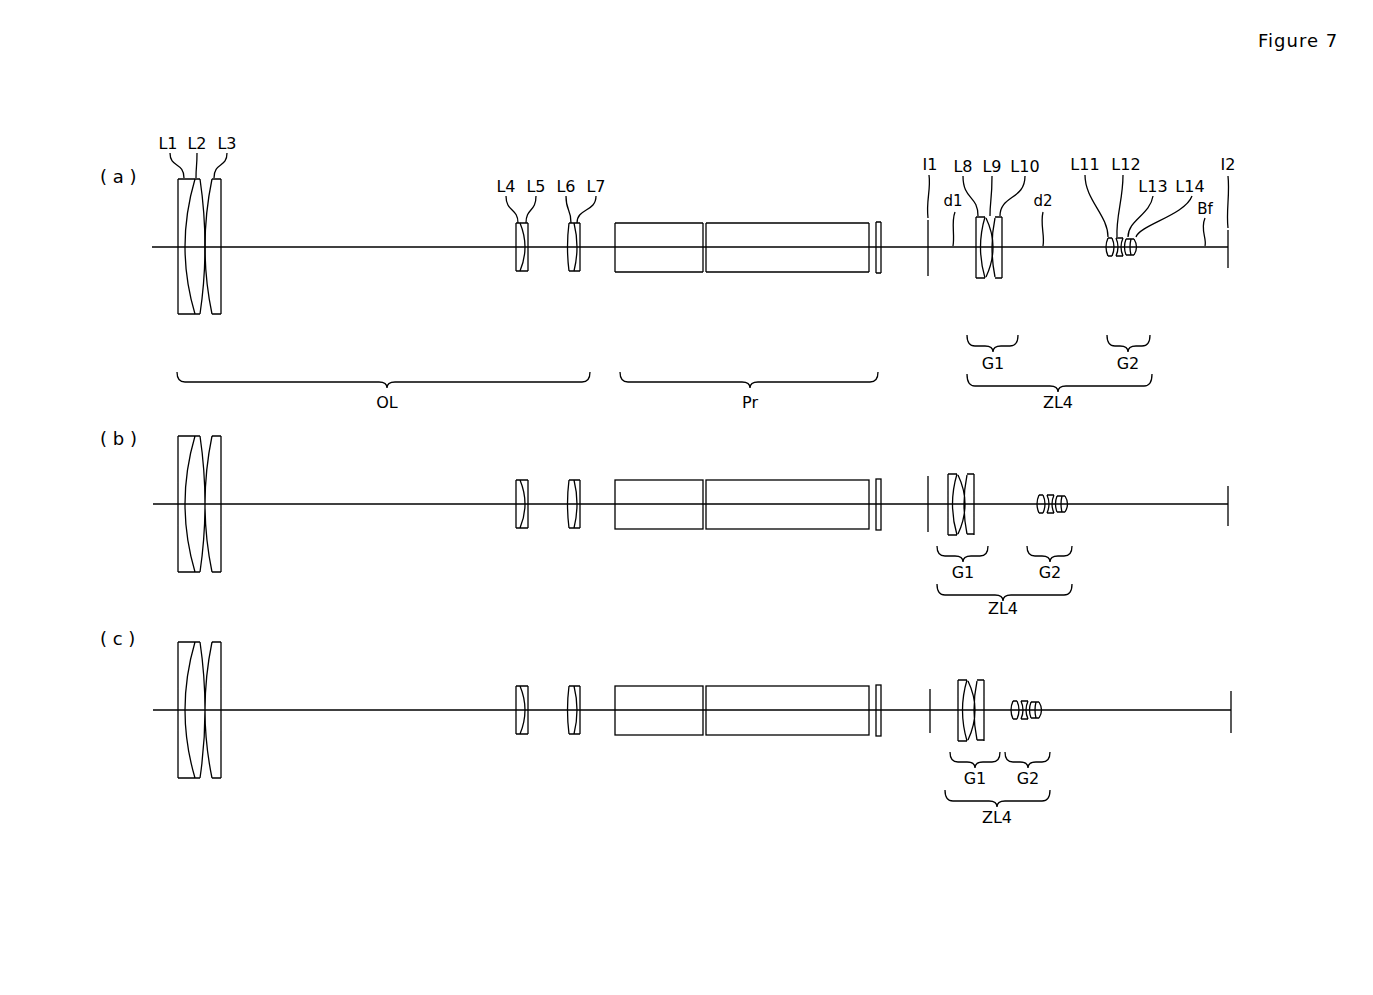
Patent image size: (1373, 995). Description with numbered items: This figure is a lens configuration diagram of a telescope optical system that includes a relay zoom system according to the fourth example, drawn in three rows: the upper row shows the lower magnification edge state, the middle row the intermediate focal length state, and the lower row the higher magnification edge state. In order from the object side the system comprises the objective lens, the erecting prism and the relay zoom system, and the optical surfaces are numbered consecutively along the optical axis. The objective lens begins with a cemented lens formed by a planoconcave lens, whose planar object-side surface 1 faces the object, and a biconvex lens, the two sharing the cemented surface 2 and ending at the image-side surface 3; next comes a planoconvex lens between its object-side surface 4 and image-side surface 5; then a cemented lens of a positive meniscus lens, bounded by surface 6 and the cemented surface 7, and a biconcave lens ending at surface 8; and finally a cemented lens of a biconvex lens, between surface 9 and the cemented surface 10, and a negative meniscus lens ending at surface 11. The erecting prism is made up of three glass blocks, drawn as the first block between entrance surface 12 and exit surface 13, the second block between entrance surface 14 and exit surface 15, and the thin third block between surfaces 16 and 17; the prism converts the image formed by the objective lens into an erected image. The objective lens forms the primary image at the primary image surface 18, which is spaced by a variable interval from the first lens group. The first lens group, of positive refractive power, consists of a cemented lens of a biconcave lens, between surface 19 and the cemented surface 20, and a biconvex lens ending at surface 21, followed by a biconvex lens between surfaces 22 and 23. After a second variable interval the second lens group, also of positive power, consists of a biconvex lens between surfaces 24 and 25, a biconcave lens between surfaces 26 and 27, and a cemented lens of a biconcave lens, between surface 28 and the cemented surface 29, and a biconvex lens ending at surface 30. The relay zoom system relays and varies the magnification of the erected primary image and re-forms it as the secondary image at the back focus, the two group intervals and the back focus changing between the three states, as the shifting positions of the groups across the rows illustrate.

The object-side surface of lens L1 1 is at (178, 314).
The cemented surface between lens L1 and lens L2 2 is at (186, 314).
The image-side surface of lens L2 3 is at (197, 314).
The object-side surface of lens L3 4 is at (213, 314).
The image-side surface of lens L3 5 is at (221, 314).
The object-side surface of lens L4 6 is at (516, 271).
The cemented surface between lens L4 and lens L5 7 is at (523, 271).
The image-side surface of lens L5 8 is at (528, 271).
The object-side surface of lens L6 9 is at (569, 271).
The cemented surface between lens L6 and lens L7 10 is at (576, 271).
The image-side surface of lens L7 11 is at (580, 271).
The secondary image surface 12 is at (615, 272).
The exit surface of first prism 13 is at (703, 272).
The entrance surface of second prism 14 is at (707, 258).
The exit surface of second prism 15 is at (869, 272).
The object-side surface of plane parallel plate 16 is at (876, 273).
The image-side surface of plane parallel plate 17 is at (881, 268).
The intermediate image plane I1 / field stop 18 is at (928, 276).
The object-side surface of lens L8 19 is at (976, 278).
The cemented surface between lens L8 and lens L9 20 is at (983, 278).
The image-side surface of lens L9 21 is at (989, 278).
The object-side surface of lens L10 22 is at (994, 278).
The image-side surface of lens L10 23 is at (1002, 278).
The object-side surface of lens L11 24 is at (1108, 256).
The image-side surface of lens L11 25 is at (1114, 256).
The object-side surface of lens L12 26 is at (1117, 256).
The image-side surface of lens L12 27 is at (1123, 256).
The object-side surface of lens L13 28 is at (1128, 256).
The cemented surface between lens L13 and lens L14 29 is at (1132, 256).
The image-side surface of lens L14 30 is at (1137, 256).